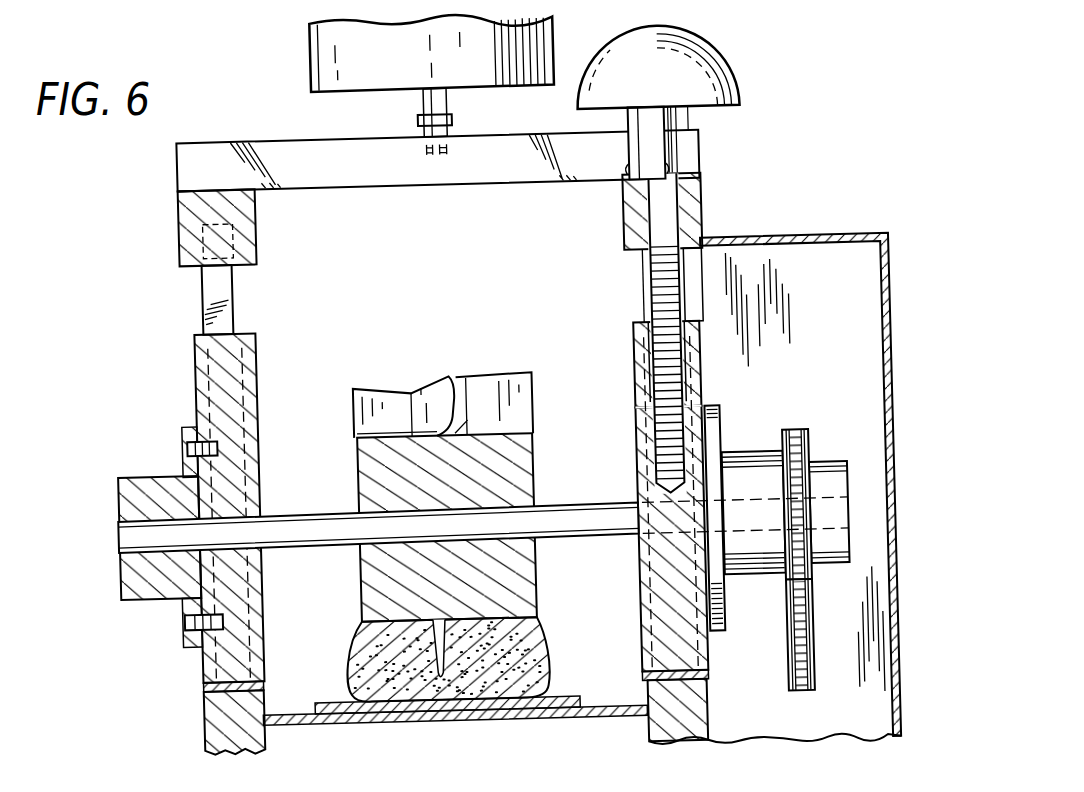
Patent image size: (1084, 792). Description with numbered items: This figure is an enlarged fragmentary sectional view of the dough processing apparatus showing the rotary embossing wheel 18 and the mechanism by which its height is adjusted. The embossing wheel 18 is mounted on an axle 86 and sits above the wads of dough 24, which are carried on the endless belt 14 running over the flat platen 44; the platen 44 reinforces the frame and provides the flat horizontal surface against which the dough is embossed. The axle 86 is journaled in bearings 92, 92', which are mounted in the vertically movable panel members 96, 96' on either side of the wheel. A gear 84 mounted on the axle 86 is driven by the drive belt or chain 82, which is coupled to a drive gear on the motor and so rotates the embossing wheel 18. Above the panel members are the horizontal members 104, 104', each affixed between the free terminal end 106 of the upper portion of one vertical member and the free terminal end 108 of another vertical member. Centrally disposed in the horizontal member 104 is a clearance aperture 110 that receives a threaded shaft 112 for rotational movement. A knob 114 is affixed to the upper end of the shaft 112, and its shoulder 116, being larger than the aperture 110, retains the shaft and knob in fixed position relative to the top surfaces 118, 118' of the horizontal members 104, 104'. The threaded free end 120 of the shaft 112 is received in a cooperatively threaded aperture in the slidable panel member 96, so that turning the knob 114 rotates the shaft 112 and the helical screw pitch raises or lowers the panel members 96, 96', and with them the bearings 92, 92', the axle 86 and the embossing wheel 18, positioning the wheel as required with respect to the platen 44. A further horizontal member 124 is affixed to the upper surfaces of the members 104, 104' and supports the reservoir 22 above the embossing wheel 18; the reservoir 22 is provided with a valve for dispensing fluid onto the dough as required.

The endless belt 14 is at (557, 731).
The rotary embossing wheel 18 is at (356, 463).
The reservoir 22 is at (318, 61).
The wads of dough 24 is at (539, 662).
The platen 44 is at (462, 718).
The drive belt or chain 82 is at (808, 692).
The gear 84 is at (808, 437).
The axle 86 is at (585, 513).
The bearing 92 is at (739, 509).
The bearing 92' is at (161, 537).
The vertically movable panel member 96 is at (678, 342).
The vertically movable panel member 96' is at (263, 494).
The horizontal member 104 is at (694, 210).
The horizontal member 104' is at (181, 228).
The free terminal end 106 is at (645, 248).
The free terminal end 108 is at (264, 185).
The clearance aperture 110 is at (684, 159).
The threaded shaft 112 is at (659, 293).
The knob 114 is at (719, 82).
The shoulder 116 is at (639, 161).
The top surface 118 is at (701, 167).
The top surface 118' is at (143, 190).
The threaded free end 120 is at (639, 371).
The horizontal member 124 is at (540, 122).